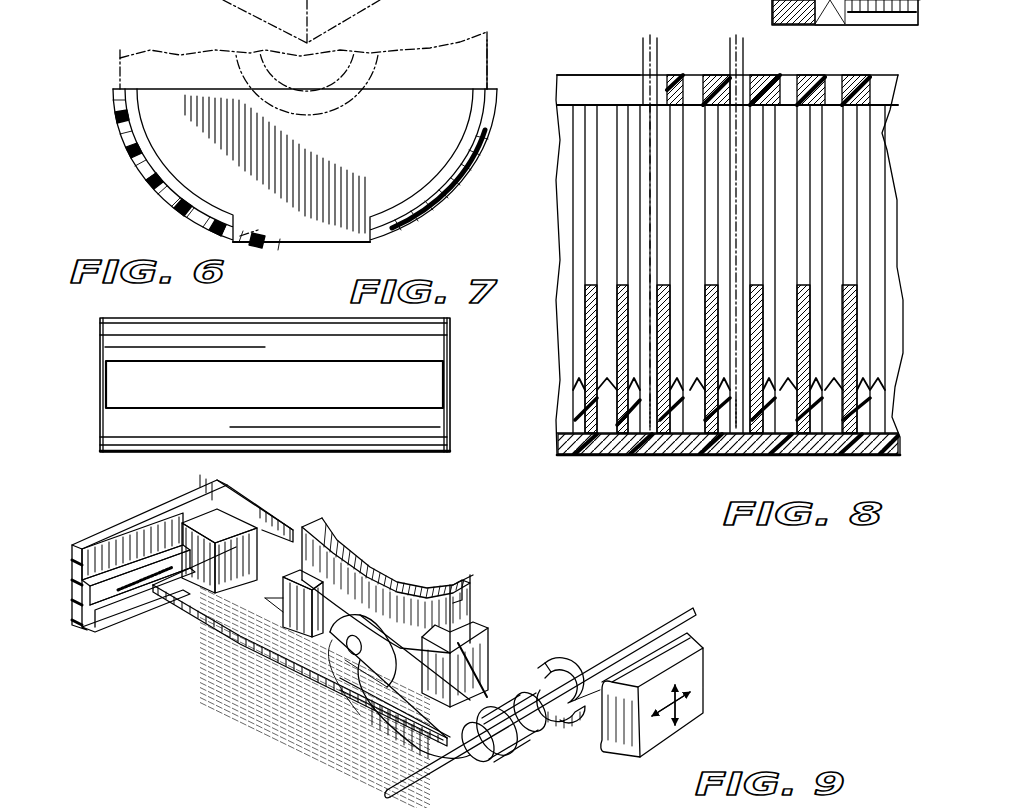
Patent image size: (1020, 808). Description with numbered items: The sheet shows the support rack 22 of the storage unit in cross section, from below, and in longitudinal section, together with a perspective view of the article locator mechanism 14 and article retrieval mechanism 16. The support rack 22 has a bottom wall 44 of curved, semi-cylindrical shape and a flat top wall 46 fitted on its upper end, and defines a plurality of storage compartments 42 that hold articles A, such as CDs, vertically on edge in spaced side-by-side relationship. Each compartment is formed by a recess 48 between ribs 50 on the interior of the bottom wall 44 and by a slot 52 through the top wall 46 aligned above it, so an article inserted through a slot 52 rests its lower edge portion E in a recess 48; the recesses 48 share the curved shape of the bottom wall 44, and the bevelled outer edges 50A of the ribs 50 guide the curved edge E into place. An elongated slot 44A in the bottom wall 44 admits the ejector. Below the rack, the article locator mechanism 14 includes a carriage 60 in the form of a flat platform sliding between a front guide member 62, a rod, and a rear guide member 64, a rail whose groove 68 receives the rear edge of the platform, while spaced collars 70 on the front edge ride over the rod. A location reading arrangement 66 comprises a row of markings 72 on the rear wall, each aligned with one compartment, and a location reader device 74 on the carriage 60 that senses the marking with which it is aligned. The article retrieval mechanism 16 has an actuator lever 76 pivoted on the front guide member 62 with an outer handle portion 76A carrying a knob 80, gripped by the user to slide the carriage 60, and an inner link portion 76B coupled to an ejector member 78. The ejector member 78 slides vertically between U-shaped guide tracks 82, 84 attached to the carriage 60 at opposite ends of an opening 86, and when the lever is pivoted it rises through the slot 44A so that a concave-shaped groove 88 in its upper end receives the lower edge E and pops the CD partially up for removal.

In FIG. 9, the article locator mechanism 14 is at (177, 597).
In FIG. 9, the article retrieval mechanism 16 is at (313, 740).
In FIG. 6, the support rack 22 is at (494, 130).
In FIG. 7, the support rack 22 is at (387, 456).
In FIG. 8, the support rack 22 is at (899, 170).
In FIG. 8, the storage compartments 42 is at (610, 108).
In FIG. 6, the bottom wall 44 is at (157, 192).
In FIG. 7, the bottom wall 44 is at (437, 347).
In FIG. 8, the bottom wall 44 is at (558, 415).
In FIG. 6, the elongated slot 44A is at (366, 243).
In FIG. 7, the elongated slot 44A is at (294, 382).
In FIG. 8, the top wall 46 is at (577, 80).
In FIG. 8, the recesses 48 is at (590, 315).
In FIG. 6, the ribs 50 is at (222, 208).
In FIG. 8, the ribs 50 is at (600, 432).
In FIG. 8, the bevelled outer edges 50A is at (788, 400).
In FIG. 8, the slots 52 is at (838, 85).
In FIG. 9, the carriage 60 is at (242, 632).
In FIG. 9, the front guide member 62 is at (440, 773).
In FIG. 9, the rear guide member 64 is at (84, 622).
In FIG. 9, the location reading arrangement 66 is at (243, 503).
In FIG. 9, the groove 68 is at (112, 580).
In FIG. 9, the collars 70 is at (558, 720).
In FIG. 9, the markings 72 is at (145, 567).
In FIG. 9, the location reader device 74 is at (150, 590).
In FIG. 9, the actuator lever 76 is at (540, 685).
In FIG. 9, the outer handle portion 76A is at (585, 727).
In FIG. 9, the inner link portion 76B is at (400, 738).
In FIG. 9, the ejector member 78 is at (330, 635).
In FIG. 9, the knob 80 is at (708, 668).
In FIG. 9, the guide track 82 is at (496, 633).
In FIG. 9, the guide track 84 is at (282, 600).
In FIG. 9, the opening 86 is at (282, 640).
In FIG. 9, the concave-shaped groove 88 is at (408, 577).
In FIG. 6, the articles A is at (487, 40).
In FIG. 8, the articles A is at (730, 50).
In FIG. 6, the lower edge portions E is at (259, 242).
In FIG. 8, the lower edge portions E is at (738, 425).